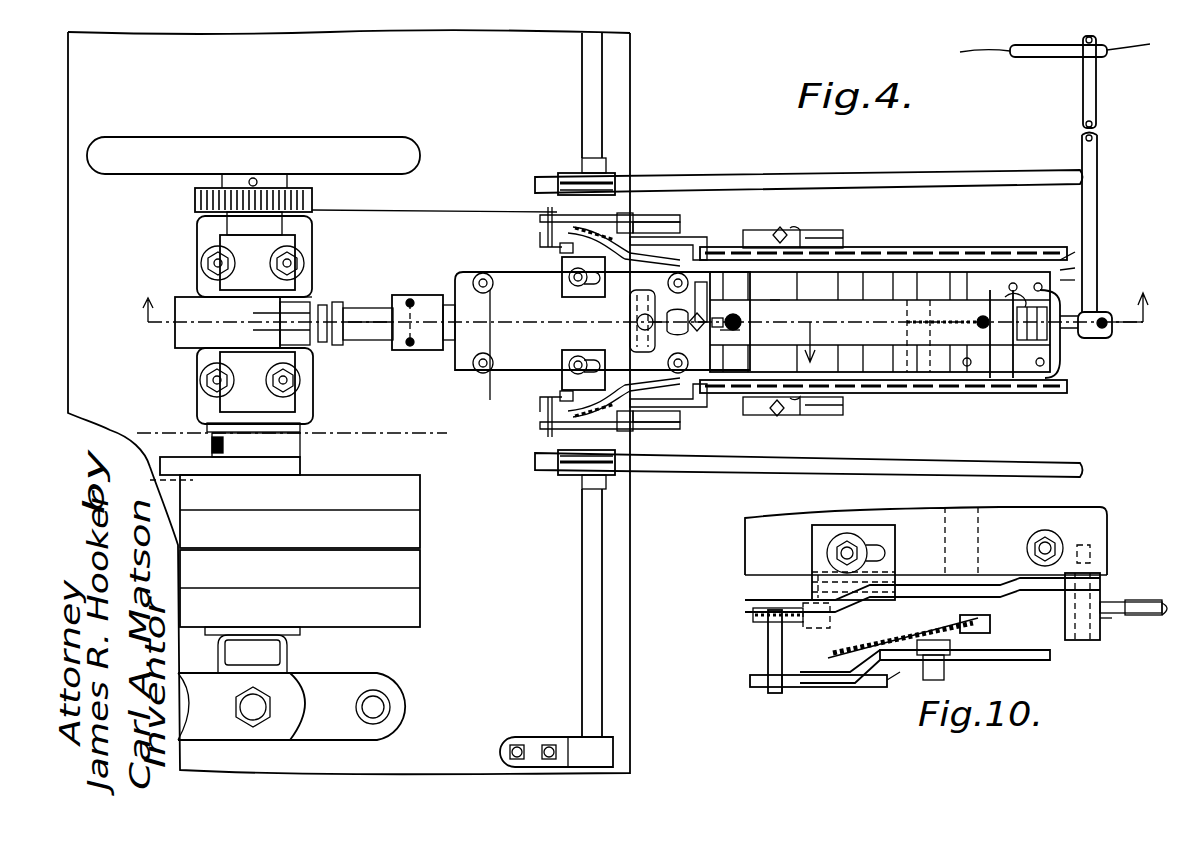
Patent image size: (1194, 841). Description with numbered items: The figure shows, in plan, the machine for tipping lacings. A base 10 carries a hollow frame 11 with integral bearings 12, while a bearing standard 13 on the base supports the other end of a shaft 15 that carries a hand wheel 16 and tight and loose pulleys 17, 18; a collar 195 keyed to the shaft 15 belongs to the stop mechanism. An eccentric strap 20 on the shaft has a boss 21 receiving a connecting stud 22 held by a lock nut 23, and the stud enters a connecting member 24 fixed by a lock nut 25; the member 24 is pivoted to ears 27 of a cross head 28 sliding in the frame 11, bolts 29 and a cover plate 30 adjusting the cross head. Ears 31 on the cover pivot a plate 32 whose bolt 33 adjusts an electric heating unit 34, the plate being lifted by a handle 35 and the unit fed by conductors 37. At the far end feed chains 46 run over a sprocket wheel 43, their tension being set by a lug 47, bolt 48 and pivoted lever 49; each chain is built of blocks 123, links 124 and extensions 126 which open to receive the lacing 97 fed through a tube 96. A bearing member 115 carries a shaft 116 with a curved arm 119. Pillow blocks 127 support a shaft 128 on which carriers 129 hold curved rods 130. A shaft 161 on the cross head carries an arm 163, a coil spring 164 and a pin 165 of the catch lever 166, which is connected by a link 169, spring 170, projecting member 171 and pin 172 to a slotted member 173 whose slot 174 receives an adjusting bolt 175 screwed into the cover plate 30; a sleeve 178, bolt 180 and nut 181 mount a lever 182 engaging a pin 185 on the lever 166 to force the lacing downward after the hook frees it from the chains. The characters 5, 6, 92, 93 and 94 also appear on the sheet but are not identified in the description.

In FIG. 4, the section line 5 is at (650, 324).
In FIG. 4, the column 6 is at (155, 445).
In FIG. 4, the base 10 is at (553, 58).
In FIG. 4, the hollow frame 11 is at (438, 215).
In FIG. 4, the bearings 12 is at (257, 250).
In FIG. 4, the bearing standard 13 is at (347, 740).
In FIG. 4, the shaft 15 is at (290, 283).
In FIG. 4, the hand or fly wheel 16 is at (375, 146).
In FIG. 4, the tight pulley 17 is at (405, 530).
In FIG. 4, the loose pulley 18 is at (408, 617).
In FIG. 4, the eccentric strap 20 is at (177, 297).
In FIG. 4, the boss 21 is at (295, 345).
In FIG. 4, the connecting stud 22 is at (322, 342).
In FIG. 4, the lock nut 23 is at (337, 345).
In FIG. 4, the connecting member 24 is at (360, 340).
In FIG. 4, the lock nut 25 is at (350, 340).
In FIG. 4, the lugs or ears 27 is at (430, 295).
In FIG. 4, the cross head 28 is at (480, 400).
In FIG. 4, the bolts 29 is at (483, 350).
In FIG. 10, the bolts 29 is at (1047, 543).
In FIG. 4, the cover plate 30 is at (513, 290).
In FIG. 10, the cover plate 30 is at (1098, 535).
In FIG. 4, the lugs or ears 31 is at (620, 312).
In FIG. 4, the plate 32 is at (757, 315).
In FIG. 4, the bolt 33 is at (680, 330).
In FIG. 4, the electric heating unit 34 is at (870, 345).
In FIG. 4, the operating handle 35 is at (700, 330).
In FIG. 4, the electric conductors 37 is at (730, 335).
In FIG. 4, the sprocket wheel 43 is at (1057, 262).
In FIG. 4, the feed chains 46 is at (923, 237).
In FIG. 4, the lug 47 is at (805, 232).
In FIG. 4, the bolt 48 is at (783, 228).
In FIG. 4, the pivoted lever 49 is at (835, 232).
In FIG. 4, the knurled nut 92 is at (195, 199).
In FIG. 4, the clamp block 93 is at (1112, 312).
In FIG. 4, the pin 94 is at (1107, 333).
In FIG. 4, the tube 96 is at (1048, 47).
In FIG. 4, the lacing 97 is at (1120, 50).
In FIG. 4, the bearing member 115 is at (1050, 283).
In FIG. 4, the shaft 116 is at (1053, 274).
In FIG. 4, the curved arm 119 is at (1003, 297).
In FIG. 10, the blocks 123 is at (1160, 590).
In FIG. 10, the links 124 is at (1108, 630).
In FIG. 10, the extension 126 is at (1160, 616).
In FIG. 4, the pillow blocks 127 is at (590, 752).
In FIG. 4, the shaft 128 is at (592, 630).
In FIG. 4, the carriers 129 is at (572, 158).
In FIG. 4, the curved bearing or rod 130 is at (640, 183).
In FIG. 10, the shaft 161 is at (987, 557).
In FIG. 10, the arm 163 is at (1003, 618).
In FIG. 10, the coil spring 164 is at (887, 680).
In FIG. 4, the pin 165 is at (575, 410).
In FIG. 10, the pin 165 is at (865, 667).
In FIG. 10, the catch lever 166 is at (880, 673).
In FIG. 10, the link 169 is at (780, 692).
In FIG. 10, the coil spring 170 is at (773, 603).
In FIG. 10, the upwardly projecting member 171 is at (768, 658).
In FIG. 10, the pin 172 is at (812, 590).
In FIG. 4, the member 173 is at (570, 358).
In FIG. 10, the member 173 is at (812, 550).
In FIG. 10, the slot 174 is at (880, 553).
In FIG. 10, the adjusting bolt 175 is at (857, 550).
In FIG. 10, the sleeve 178 is at (1097, 585).
In FIG. 10, the bolt 180 is at (933, 683).
In FIG. 10, the nut 181 is at (933, 680).
In FIG. 10, the lever 182 is at (1050, 657).
In FIG. 10, the pin 185 is at (768, 662).
In FIG. 4, the collar 195 is at (240, 428).